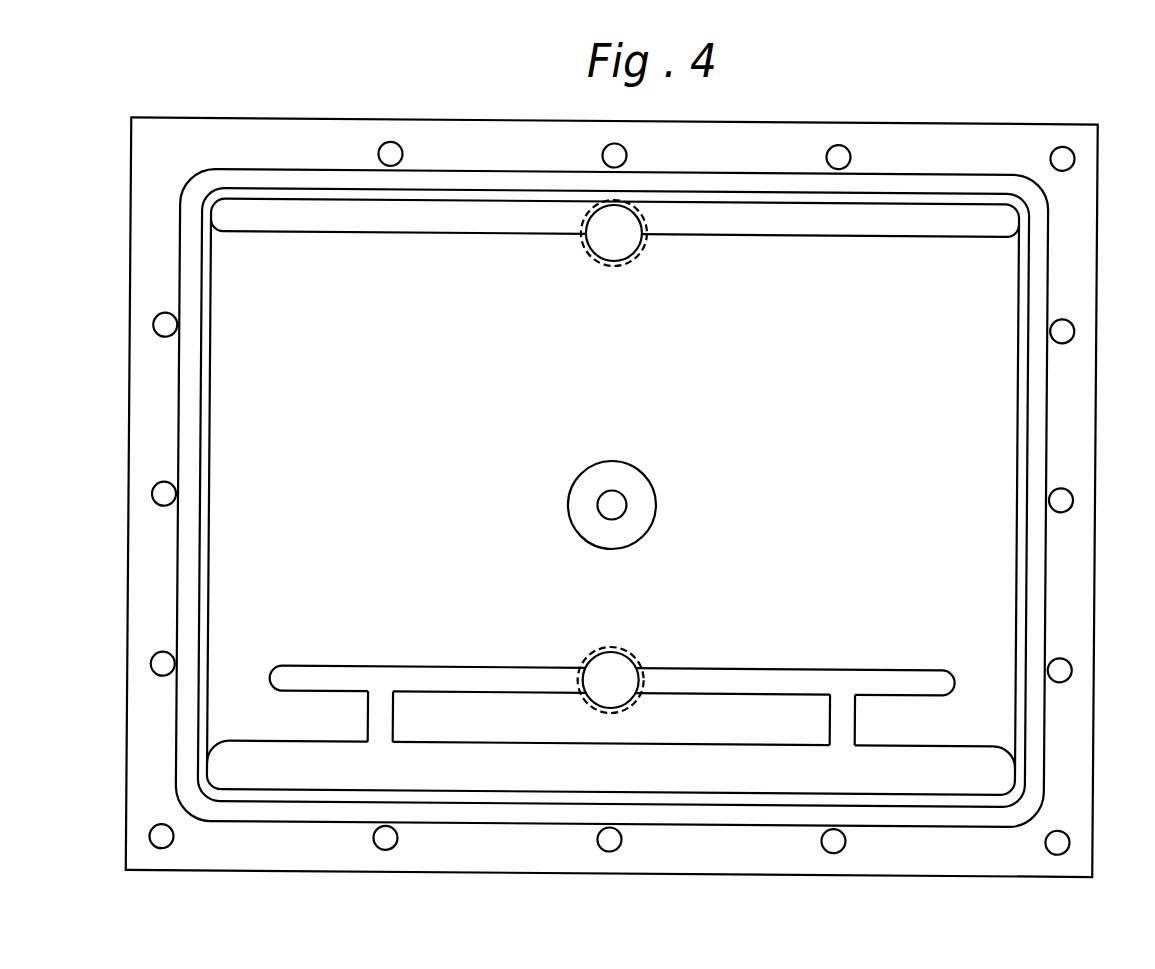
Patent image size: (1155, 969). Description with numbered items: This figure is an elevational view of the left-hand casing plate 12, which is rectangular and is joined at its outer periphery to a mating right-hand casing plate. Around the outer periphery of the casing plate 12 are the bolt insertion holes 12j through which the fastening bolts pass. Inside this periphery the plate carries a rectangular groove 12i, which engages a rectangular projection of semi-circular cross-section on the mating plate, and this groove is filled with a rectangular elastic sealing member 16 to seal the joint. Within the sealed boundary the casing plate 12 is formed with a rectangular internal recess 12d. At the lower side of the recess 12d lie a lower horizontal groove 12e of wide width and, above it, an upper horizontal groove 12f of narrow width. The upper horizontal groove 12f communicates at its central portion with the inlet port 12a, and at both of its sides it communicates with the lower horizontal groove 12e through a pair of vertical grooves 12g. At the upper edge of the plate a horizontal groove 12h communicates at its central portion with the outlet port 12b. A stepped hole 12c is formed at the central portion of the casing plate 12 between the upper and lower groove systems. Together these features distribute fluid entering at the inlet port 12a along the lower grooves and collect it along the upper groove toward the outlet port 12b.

The left-hand casing plate 12 is at (1083, 698).
The inlet port 12a is at (625, 661).
The outlet port 12b is at (607, 268).
The stepped hole 12c is at (644, 478).
The rectangular internal recess 12d is at (1014, 352).
The lower horizontal groove 12e is at (681, 747).
The upper horizontal groove 12f is at (768, 671).
The vertical grooves 12g is at (392, 712).
The horizontal groove 12h is at (727, 237).
The rectangular groove 12i is at (183, 380).
The bolt insertion holes 12j is at (165, 316).
The rectangular elastic sealing member 16 is at (185, 443).